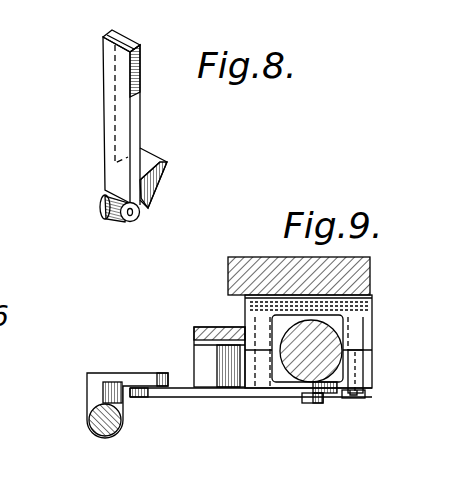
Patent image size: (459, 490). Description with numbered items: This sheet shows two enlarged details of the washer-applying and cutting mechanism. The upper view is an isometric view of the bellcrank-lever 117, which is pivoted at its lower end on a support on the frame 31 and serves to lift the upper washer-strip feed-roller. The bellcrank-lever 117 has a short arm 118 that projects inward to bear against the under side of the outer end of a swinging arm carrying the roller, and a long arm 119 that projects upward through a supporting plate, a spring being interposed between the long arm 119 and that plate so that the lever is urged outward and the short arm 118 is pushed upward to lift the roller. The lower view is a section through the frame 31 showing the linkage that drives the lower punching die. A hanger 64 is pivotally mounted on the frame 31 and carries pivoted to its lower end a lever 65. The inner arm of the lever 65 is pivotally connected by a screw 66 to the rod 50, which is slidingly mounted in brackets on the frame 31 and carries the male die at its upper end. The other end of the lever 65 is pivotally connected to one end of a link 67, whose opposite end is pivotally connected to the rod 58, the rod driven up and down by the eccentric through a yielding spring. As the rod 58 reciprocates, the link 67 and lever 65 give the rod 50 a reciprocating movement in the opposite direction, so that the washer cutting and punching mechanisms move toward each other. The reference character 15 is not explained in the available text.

In FIG. 8, the bellcrank-lever 117 is at (103, 132).
In FIG. 8, the long arm 119 is at (126, 93).
In FIG. 8, the short arm 118 is at (167, 158).
In FIG. 9, the frame 31 is at (240, 257).
In FIG. 9, the frame 15 is at (373, 395).
In FIG. 9, the rod 50 is at (300, 367).
In FIG. 9, the screw 66 is at (313, 404).
In FIG. 9, the lever 65 is at (195, 397).
In FIG. 9, the hanger 64 is at (196, 327).
In FIG. 9, the link 67 is at (122, 363).
In FIG. 9, the rod 58 is at (96, 433).